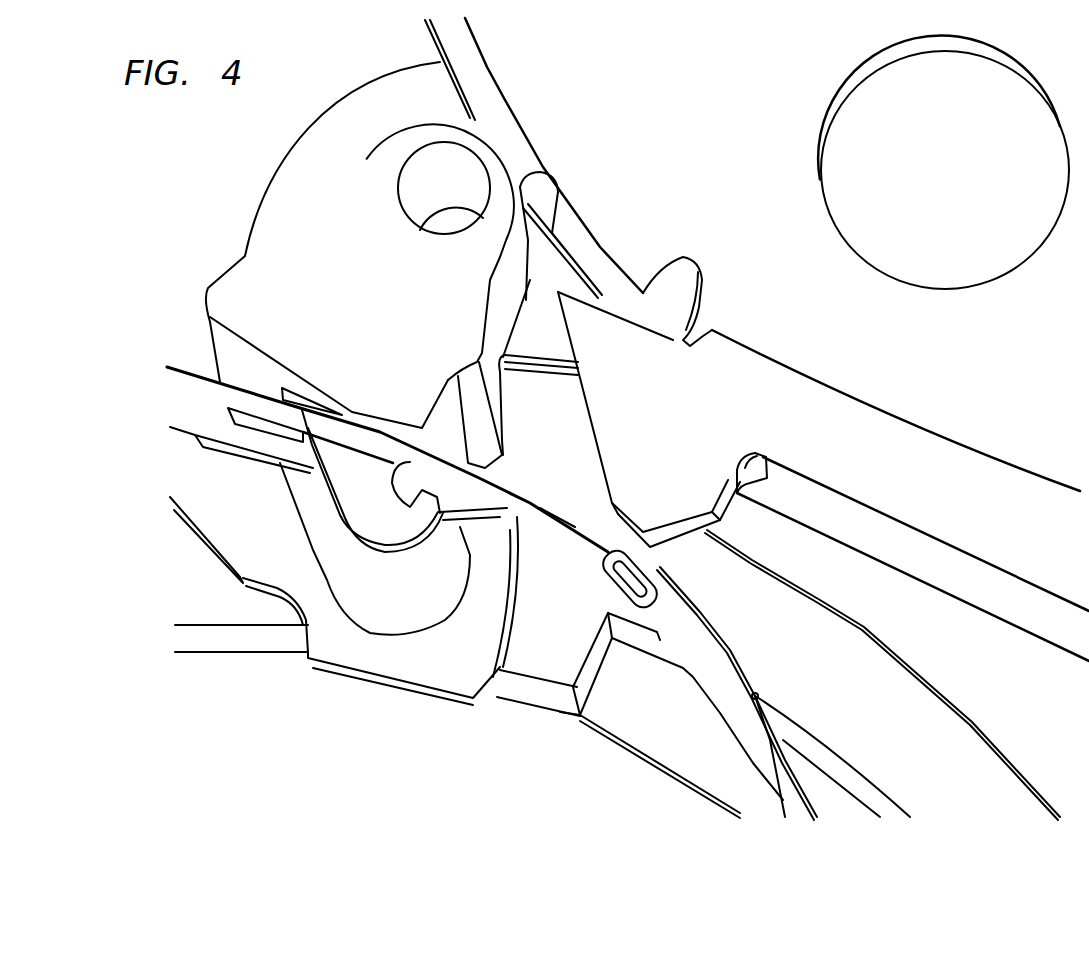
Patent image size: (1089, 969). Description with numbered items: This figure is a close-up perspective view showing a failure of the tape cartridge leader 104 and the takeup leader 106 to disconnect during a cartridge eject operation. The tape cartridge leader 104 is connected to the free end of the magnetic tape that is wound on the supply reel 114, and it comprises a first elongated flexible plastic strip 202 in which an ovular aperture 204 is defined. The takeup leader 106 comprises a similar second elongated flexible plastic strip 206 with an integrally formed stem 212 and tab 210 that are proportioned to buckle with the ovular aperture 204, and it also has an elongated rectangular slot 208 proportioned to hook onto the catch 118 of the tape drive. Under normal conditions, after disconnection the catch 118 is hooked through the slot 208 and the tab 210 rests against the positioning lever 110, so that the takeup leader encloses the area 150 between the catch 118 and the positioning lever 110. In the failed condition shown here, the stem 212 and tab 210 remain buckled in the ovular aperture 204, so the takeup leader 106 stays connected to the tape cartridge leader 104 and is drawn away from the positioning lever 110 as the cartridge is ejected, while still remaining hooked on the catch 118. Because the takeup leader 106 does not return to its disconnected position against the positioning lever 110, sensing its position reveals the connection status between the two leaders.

The tape cartridge leader 104 is at (787, 800).
The takeup leader 106 is at (187, 367).
The positioning lever 110 is at (670, 428).
The supply reel 114 is at (732, 165).
The catch 118 is at (372, 316).
The area 150 is at (559, 428).
The first elongated flexible plastic strip 202 is at (703, 665).
The ovular aperture 204 is at (660, 600).
The second elongated flexible plastic strip 206 is at (478, 501).
The elongated rectangular slot 208 is at (285, 430).
The tab 210 is at (627, 592).
The stem 212 is at (562, 533).